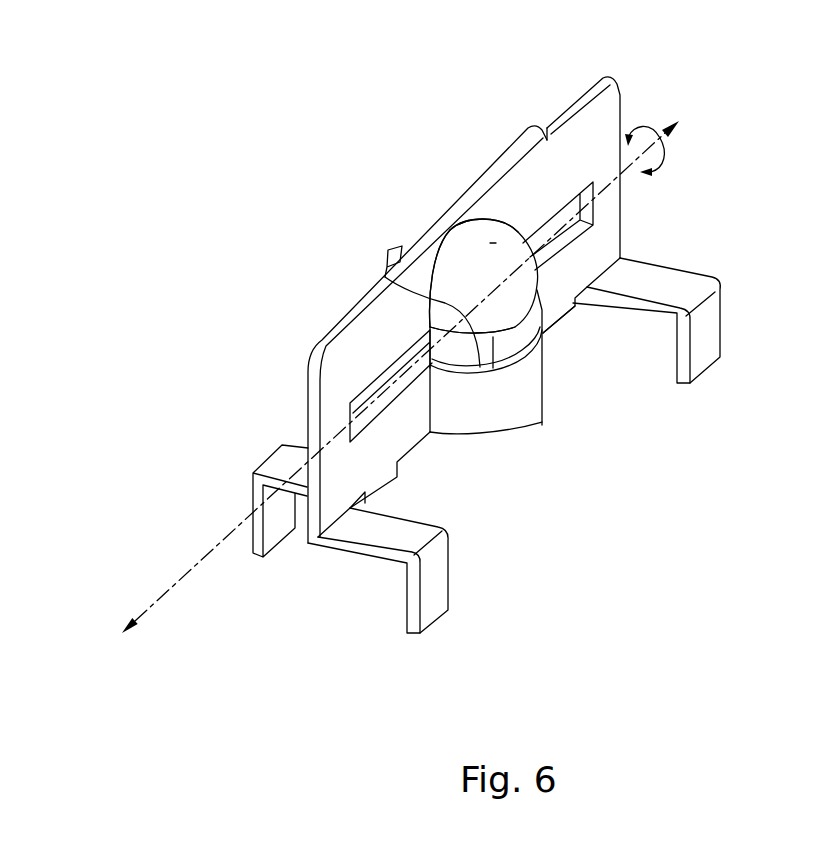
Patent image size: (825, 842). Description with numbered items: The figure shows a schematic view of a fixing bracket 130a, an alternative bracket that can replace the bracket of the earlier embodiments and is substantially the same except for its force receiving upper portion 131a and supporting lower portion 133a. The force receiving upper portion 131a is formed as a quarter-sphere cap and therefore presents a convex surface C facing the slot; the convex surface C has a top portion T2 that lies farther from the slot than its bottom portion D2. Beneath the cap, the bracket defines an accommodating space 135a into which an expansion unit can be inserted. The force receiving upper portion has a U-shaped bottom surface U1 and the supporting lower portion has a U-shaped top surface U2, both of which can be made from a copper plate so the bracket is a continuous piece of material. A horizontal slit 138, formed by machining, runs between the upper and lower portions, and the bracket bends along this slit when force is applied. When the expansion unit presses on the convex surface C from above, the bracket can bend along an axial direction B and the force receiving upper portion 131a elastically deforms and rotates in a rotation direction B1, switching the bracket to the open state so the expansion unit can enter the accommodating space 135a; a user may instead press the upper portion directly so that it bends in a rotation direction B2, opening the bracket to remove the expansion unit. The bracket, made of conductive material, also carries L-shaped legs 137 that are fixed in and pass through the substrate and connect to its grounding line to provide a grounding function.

The fixing bracket 130a is at (236, 80).
The force receiving upper portion 131a is at (450, 258).
The supporting lower portion 133a is at (494, 416).
The accommodating space 135a is at (460, 376).
The L-shaped legs 137 is at (712, 325).
The horizontal slit 138 is at (380, 365).
The top portion T2 is at (460, 206).
The convex surface C is at (493, 243).
The U-shaped top surface U2 is at (385, 277).
The U-shaped bottom surface U1 is at (522, 340).
The bottom portion D2 is at (560, 326).
The axial direction B is at (399, 371).
The rotation direction B1 is at (651, 170).
The rotation direction B2 is at (642, 118).